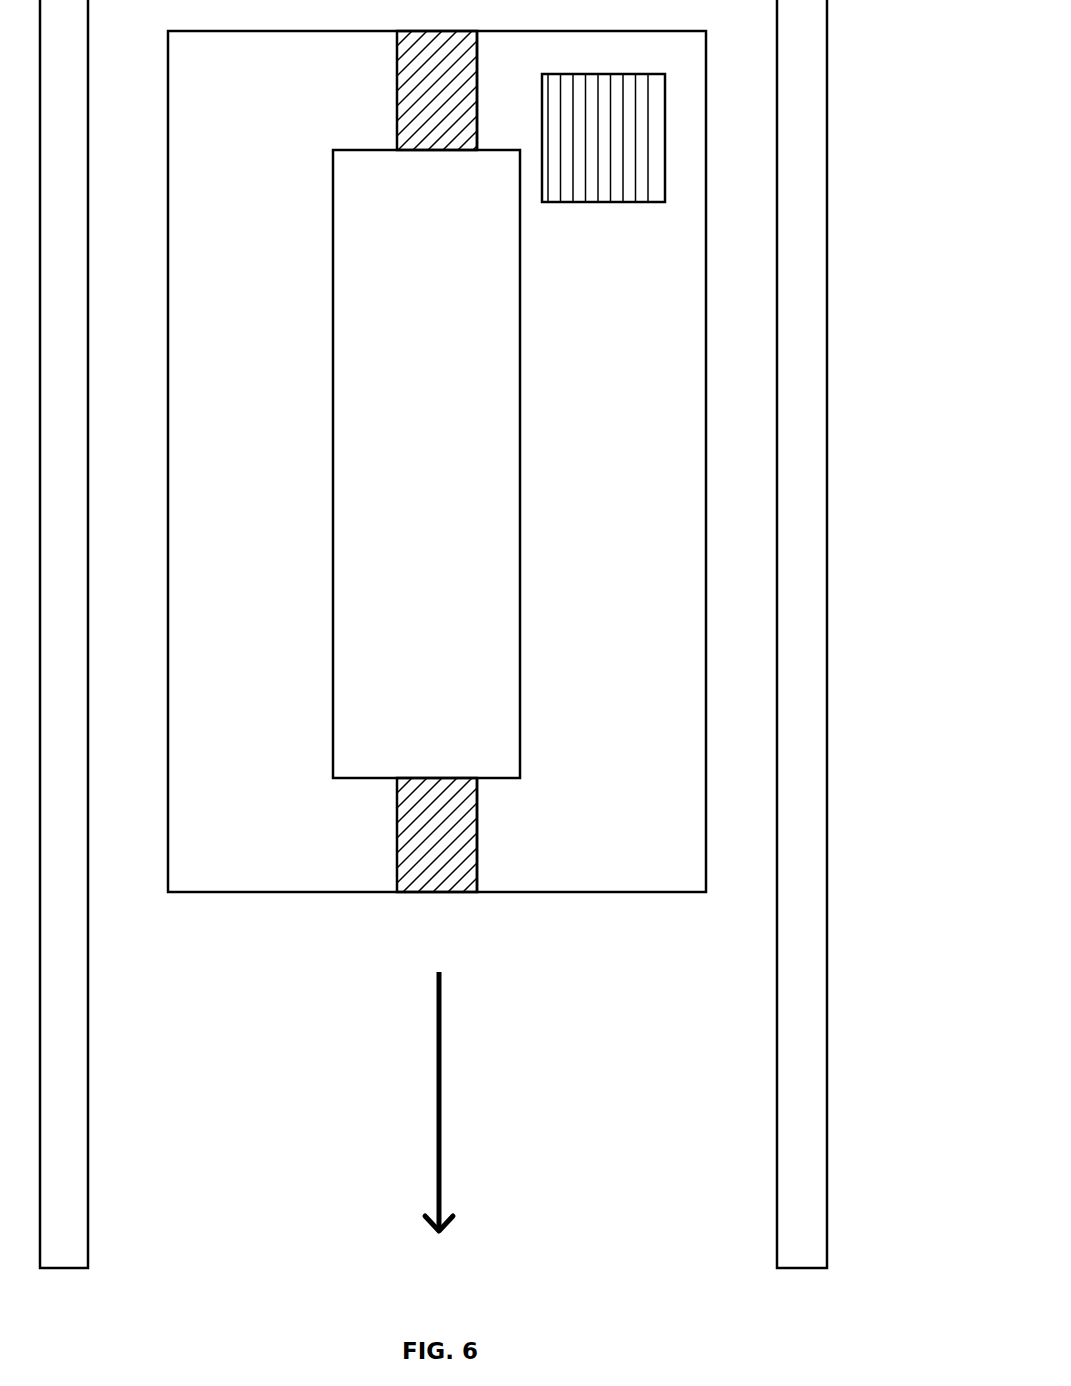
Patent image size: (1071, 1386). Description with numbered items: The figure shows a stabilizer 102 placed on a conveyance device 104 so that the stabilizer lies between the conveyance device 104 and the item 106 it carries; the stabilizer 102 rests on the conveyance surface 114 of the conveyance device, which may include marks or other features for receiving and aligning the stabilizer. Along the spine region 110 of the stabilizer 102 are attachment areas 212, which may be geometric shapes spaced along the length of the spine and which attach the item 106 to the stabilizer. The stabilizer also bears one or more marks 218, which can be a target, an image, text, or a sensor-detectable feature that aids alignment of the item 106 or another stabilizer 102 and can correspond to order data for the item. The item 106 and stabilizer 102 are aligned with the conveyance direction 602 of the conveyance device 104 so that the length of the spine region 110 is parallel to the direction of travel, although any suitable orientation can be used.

The stabilizer 102 is at (706, 313).
The conveyance device 104 is at (827, 177).
The item 106 is at (498, 330).
The spine region 110 is at (478, 63).
The conveyance surface 114 is at (725, 1036).
The attachment area 212 is at (430, 50).
The mark 218 is at (665, 85).
The conveyance direction 602 is at (440, 1095).